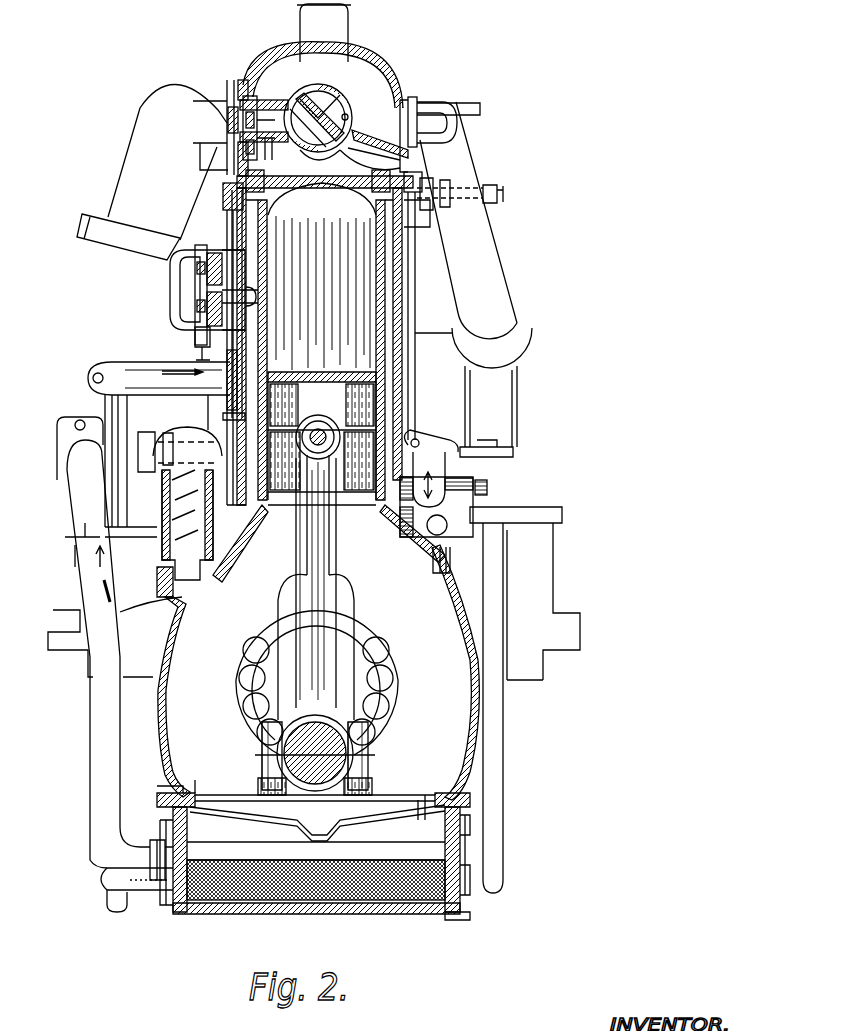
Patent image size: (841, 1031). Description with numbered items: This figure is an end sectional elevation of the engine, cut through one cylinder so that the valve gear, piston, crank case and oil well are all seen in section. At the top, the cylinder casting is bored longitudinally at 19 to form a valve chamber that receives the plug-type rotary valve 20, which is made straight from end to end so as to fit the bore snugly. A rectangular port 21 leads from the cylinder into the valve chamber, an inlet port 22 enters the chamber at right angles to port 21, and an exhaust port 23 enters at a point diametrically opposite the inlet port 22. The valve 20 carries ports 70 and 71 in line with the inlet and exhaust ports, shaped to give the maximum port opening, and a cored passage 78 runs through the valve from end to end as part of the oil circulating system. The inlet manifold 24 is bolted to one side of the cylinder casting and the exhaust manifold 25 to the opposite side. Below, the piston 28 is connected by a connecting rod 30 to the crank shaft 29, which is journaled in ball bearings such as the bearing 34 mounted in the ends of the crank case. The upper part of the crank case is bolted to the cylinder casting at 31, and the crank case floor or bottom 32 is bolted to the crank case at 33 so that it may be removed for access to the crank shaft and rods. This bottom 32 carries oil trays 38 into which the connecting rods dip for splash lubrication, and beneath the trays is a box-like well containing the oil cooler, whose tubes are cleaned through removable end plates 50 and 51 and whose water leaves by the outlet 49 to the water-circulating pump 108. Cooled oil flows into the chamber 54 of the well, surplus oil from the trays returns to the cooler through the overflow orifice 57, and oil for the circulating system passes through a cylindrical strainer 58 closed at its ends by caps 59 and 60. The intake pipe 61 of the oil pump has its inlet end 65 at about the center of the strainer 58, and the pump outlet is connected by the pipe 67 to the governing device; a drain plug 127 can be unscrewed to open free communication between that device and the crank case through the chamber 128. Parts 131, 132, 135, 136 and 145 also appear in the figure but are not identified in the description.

The valve chamber bore 19 is at (345, 93).
The rotary valve 20 is at (324, 110).
The rectangular port 21 is at (370, 157).
The inlet port 22 is at (400, 117).
The exhaust port 23 is at (240, 118).
The inlet manifold 24 is at (483, 253).
The exhaust manifold 25 is at (150, 124).
The piston 28 is at (322, 376).
The crank shaft 29 is at (315, 755).
The connecting rod 30 is at (305, 552).
The crank case bolting point 31 is at (254, 498).
The crank case floor or bottom 32 is at (252, 818).
The floor bolting point 33 is at (183, 800).
The ball bearing 34 is at (250, 658).
The oil tray 38 is at (380, 800).
The cooler water outlet 49 is at (98, 772).
The removable end plate 50 is at (464, 826).
The removable end plate 51 is at (155, 845).
The well chamber 54 is at (462, 852).
The overflow orifice 57 is at (422, 800).
The strainer 58 is at (398, 886).
The strainer cap 59 is at (468, 906).
The strainer cap 60 is at (178, 900).
The intake pipe 61 is at (118, 886).
The intake pipe inlet end 65 is at (308, 902).
The pipe 67 is at (494, 740).
The valve port 70 is at (348, 100).
The valve port 71 is at (308, 145).
The cored passage 78 is at (298, 93).
The water-circulating pump 108 is at (103, 402).
The drain plug 127 is at (458, 540).
The chamber 128 is at (435, 562).
The intake flange 131 is at (206, 173).
The metering valve 132 is at (196, 277).
The metering passage 135 is at (198, 306).
The valve stem 136 is at (197, 340).
The stud 145 is at (350, 118).